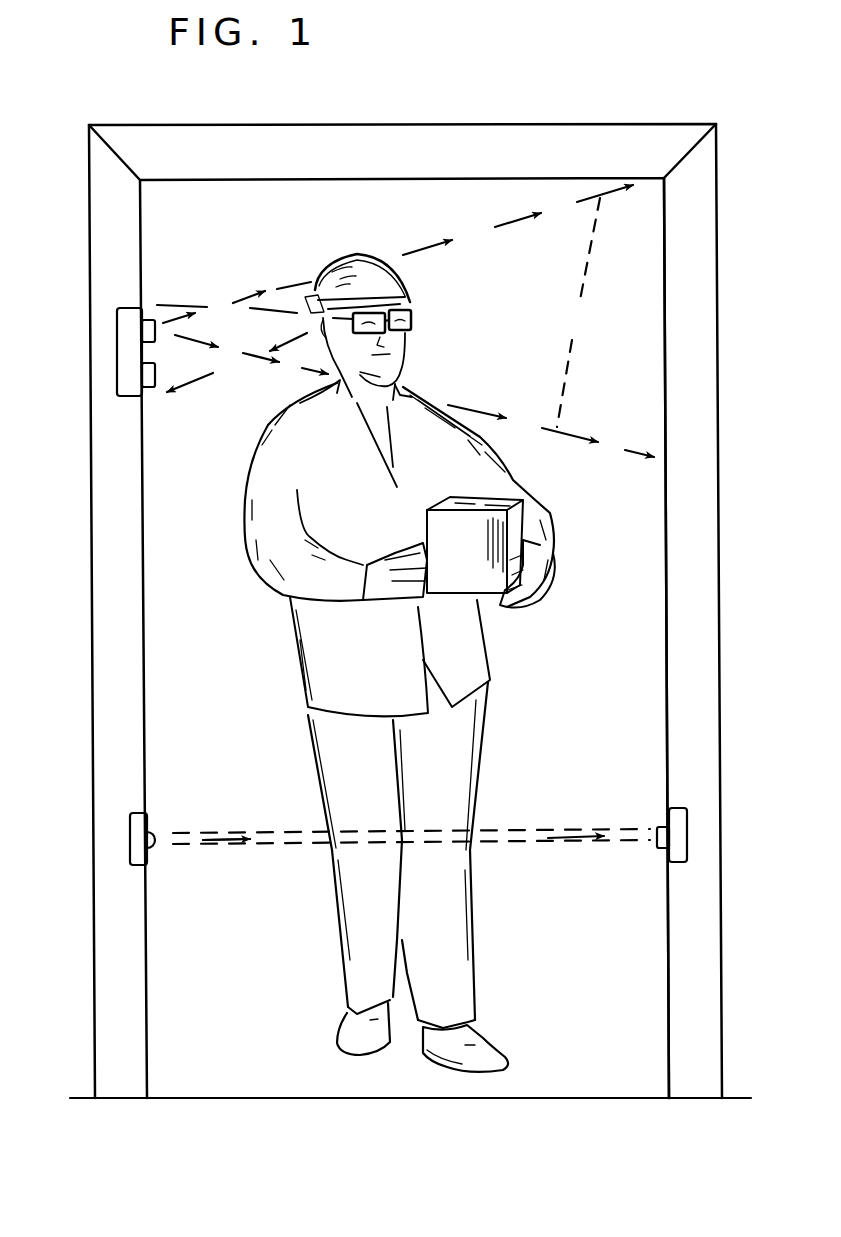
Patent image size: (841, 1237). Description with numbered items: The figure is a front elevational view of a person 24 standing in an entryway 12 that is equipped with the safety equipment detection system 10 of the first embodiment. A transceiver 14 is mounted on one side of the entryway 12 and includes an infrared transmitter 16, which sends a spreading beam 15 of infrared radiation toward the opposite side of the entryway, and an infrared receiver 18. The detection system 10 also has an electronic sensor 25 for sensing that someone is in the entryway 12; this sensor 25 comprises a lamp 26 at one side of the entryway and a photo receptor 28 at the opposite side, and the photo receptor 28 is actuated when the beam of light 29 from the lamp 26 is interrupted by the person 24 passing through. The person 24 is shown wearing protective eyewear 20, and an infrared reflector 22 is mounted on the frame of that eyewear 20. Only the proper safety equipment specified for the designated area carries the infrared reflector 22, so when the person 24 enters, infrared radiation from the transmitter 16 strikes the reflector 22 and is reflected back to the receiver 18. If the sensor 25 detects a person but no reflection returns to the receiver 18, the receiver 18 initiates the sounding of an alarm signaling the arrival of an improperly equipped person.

The detection system 10 is at (136, 101).
The entryway 12 is at (664, 313).
The transceiver 14 is at (117, 315).
The spreading beam 15 is at (571, 320).
The infrared transmitter 16 is at (146, 329).
The infrared receiver 18 is at (145, 375).
The protective eyewear 20 is at (411, 311).
The infrared reflector 22 is at (314, 288).
The person 24 is at (283, 572).
The electronic sensor 25 is at (85, 818).
The lamp 26 is at (148, 832).
The photo receptor 28 is at (662, 830).
The beam of light 29 is at (275, 846).